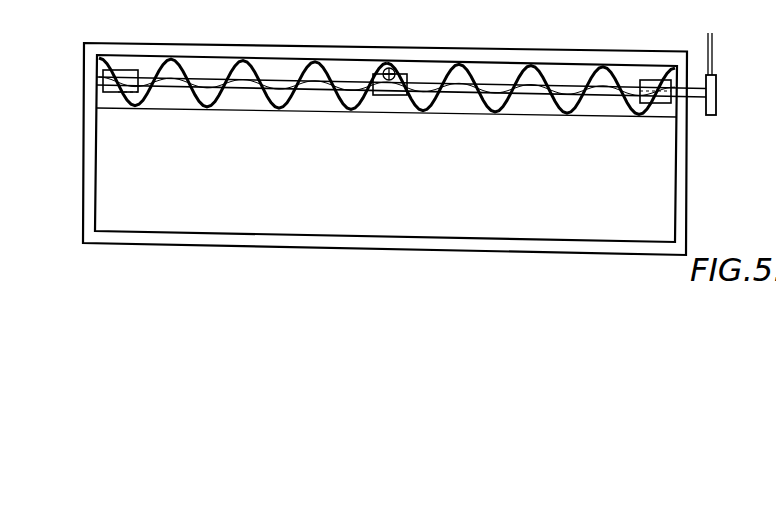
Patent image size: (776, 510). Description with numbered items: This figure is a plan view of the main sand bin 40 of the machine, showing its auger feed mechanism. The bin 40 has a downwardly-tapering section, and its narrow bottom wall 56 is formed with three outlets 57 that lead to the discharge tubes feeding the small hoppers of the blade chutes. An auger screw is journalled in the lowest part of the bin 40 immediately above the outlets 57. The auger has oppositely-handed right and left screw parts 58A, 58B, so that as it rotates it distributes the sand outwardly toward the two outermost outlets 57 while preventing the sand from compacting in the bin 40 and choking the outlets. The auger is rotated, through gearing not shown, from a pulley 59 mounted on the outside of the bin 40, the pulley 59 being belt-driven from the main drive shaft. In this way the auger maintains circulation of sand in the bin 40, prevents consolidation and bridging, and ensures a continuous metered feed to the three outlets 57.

The sand bin 40 is at (688, 188).
The bottom wall 56 is at (468, 101).
The outlets 57 is at (112, 96).
The right screw part 58A is at (570, 106).
The left screw part 58B is at (288, 102).
The pulley 59 is at (717, 108).